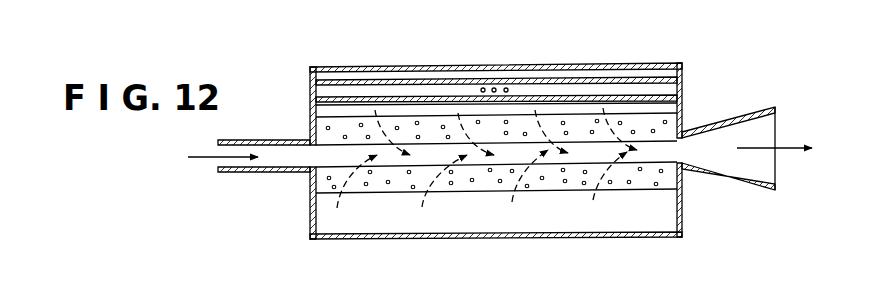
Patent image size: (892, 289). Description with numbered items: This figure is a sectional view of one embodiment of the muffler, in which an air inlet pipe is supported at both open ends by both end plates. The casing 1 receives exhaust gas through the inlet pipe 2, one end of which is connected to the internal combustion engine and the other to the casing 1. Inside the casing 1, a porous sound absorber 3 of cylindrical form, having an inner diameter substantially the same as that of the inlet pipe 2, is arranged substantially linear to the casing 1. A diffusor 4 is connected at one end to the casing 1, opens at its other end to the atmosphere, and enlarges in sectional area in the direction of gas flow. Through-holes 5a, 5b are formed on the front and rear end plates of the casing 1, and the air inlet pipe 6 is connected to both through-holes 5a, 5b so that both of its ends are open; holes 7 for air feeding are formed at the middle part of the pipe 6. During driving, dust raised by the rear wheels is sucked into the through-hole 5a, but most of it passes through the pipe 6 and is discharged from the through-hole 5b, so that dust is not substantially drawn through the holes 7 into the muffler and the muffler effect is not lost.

The casing 1 is at (545, 66).
The inlet pipe 2 is at (257, 172).
The porous sound absorber 3 is at (463, 189).
The diffusor 4 is at (722, 172).
The through-hole 5a is at (310, 88).
The through-hole 5b is at (683, 87).
The air inlet pipe 6 is at (423, 81).
The holes for air feeding 7 is at (496, 87).